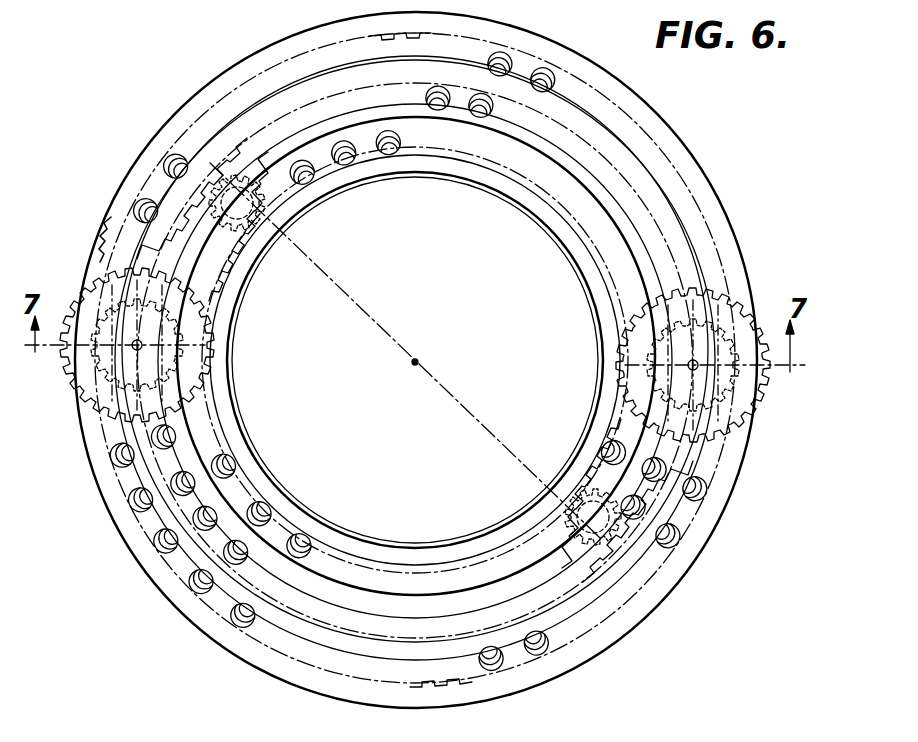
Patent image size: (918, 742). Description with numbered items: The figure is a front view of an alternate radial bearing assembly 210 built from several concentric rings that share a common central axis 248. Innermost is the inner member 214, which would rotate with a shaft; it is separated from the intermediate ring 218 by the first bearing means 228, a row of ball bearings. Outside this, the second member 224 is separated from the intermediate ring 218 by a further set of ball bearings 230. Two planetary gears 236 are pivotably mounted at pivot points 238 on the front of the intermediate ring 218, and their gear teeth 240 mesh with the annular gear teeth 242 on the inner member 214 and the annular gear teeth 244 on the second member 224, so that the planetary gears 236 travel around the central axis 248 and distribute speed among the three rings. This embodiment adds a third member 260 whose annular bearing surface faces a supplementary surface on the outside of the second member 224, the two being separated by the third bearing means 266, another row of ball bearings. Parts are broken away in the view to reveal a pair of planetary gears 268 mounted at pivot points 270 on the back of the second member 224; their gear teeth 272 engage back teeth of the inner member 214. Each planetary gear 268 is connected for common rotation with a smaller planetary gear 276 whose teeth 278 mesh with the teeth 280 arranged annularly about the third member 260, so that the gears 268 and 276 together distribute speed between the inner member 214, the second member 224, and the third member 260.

The radial bearing assembly 210 is at (668, 622).
The inner member 214 is at (560, 232).
The intermediate ring 218 is at (447, 108).
The second member 224 is at (590, 128).
The first bearing means 228 is at (388, 148).
The bearing means 230 is at (470, 95).
The planetary gears 236 is at (285, 222).
The pivot points 238 is at (248, 243).
The gear teeth 240 is at (185, 178).
The annular gear teeth 242 is at (220, 310).
The annular gear teeth 244 is at (125, 245).
The common central axis 248 is at (414, 364).
The third member 260 is at (660, 152).
The third bearing means 266 is at (176, 160).
The planetary gears 268 is at (745, 310).
The pivot points 270 is at (135, 347).
The gear teeth 272 is at (765, 400).
The smaller planetary gear 276 is at (110, 405).
The teeth 278 is at (222, 352).
The teeth 280 is at (112, 243).